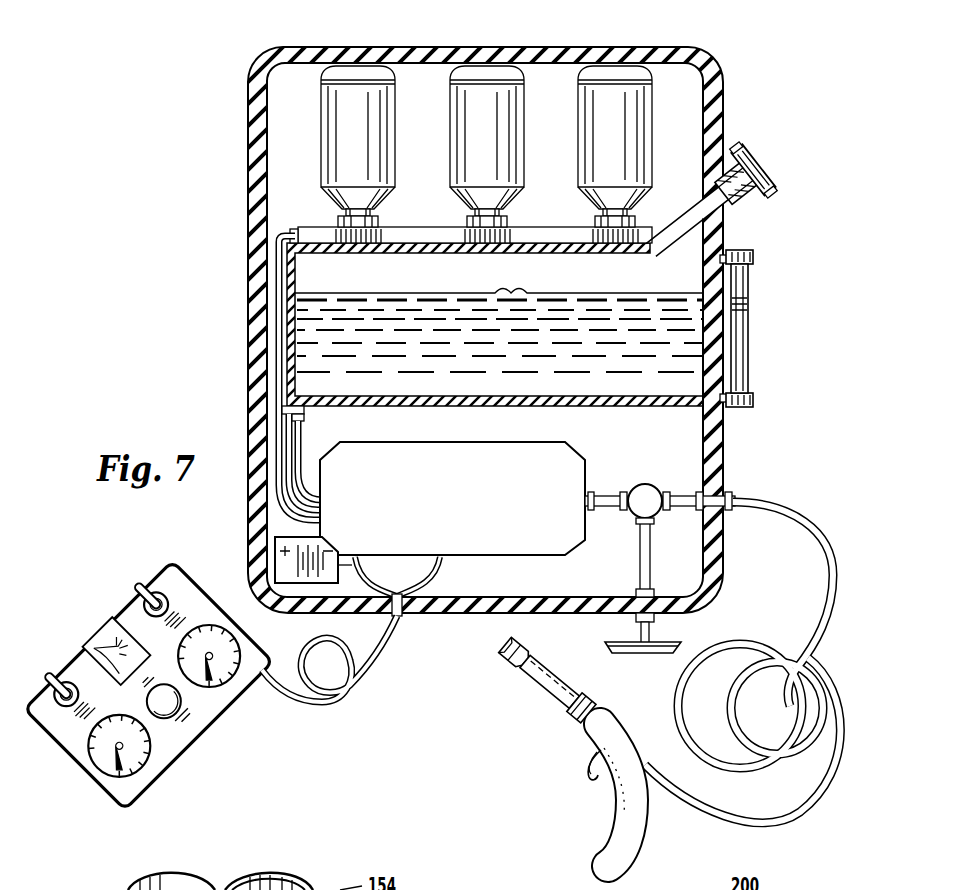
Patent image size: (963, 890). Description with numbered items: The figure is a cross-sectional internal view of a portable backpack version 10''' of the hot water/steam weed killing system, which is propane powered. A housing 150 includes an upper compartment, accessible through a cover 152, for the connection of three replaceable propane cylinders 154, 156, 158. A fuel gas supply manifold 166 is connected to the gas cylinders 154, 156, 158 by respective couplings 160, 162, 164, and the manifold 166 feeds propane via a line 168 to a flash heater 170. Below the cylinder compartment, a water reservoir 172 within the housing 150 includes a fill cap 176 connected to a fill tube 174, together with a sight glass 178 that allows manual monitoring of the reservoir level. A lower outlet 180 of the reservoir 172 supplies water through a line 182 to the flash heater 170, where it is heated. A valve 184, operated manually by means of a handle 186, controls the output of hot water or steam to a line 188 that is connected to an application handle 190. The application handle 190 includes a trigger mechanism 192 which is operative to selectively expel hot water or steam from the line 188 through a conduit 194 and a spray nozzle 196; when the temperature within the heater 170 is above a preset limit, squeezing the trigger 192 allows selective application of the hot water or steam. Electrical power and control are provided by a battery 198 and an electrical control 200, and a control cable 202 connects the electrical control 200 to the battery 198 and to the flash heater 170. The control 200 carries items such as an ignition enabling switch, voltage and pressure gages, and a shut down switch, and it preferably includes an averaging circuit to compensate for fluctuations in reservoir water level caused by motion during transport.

The portable backpack version of the weed killing system 10''' is at (804, 42).
The housing 150 is at (250, 155).
The cover 152 is at (490, 47).
The propane cylinder 154 is at (340, 118).
The propane cylinder 156 is at (466, 118).
The propane cylinder 158 is at (596, 120).
The coupling 160 is at (332, 216).
The coupling 162 is at (460, 220).
The coupling 164 is at (590, 220).
The fuel gas supply manifold 166 is at (276, 231).
The line 168 is at (290, 308).
The flash heater 170 is at (471, 515).
The water reservoir 172 is at (745, 238).
The fill tube 174 is at (750, 213).
The fill cap 176 is at (771, 160).
The sight glass 178 is at (752, 333).
The lower outlet 180 is at (326, 418).
The line 182 is at (296, 442).
The valve 184 is at (645, 486).
The handle 186 is at (641, 662).
The line 188 is at (776, 495).
The application handle 190 is at (603, 823).
The trigger mechanism 192 is at (584, 766).
The conduit 194 is at (562, 700).
The spray nozzle 196 is at (504, 652).
The battery 198 is at (276, 529).
The electrical control 200 is at (200, 748).
The control cable 202 is at (366, 692).